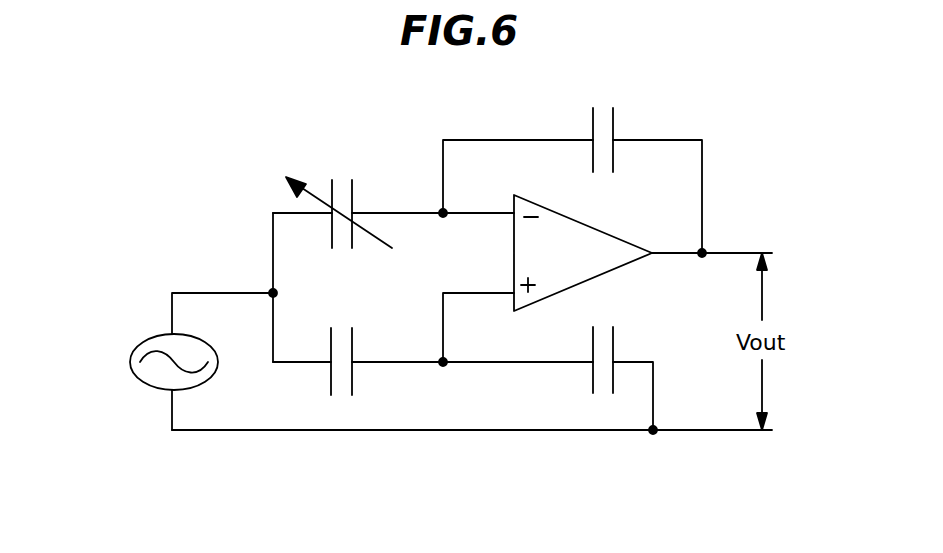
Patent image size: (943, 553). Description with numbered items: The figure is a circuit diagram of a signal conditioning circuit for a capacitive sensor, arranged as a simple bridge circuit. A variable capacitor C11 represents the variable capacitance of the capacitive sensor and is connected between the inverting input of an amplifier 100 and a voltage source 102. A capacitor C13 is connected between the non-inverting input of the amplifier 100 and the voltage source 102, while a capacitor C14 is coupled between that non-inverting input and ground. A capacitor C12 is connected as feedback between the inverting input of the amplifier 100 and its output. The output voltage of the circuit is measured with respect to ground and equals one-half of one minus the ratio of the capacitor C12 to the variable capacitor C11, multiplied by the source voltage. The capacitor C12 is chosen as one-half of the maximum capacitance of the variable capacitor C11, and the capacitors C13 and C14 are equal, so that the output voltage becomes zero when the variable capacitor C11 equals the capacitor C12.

The amplifier 100 is at (613, 232).
The voltage source 102 is at (150, 338).
The variable capacitor C11 is at (339, 190).
The capacitor C12 is at (634, 129).
The capacitor C13 is at (373, 372).
The capacitor C14 is at (632, 350).